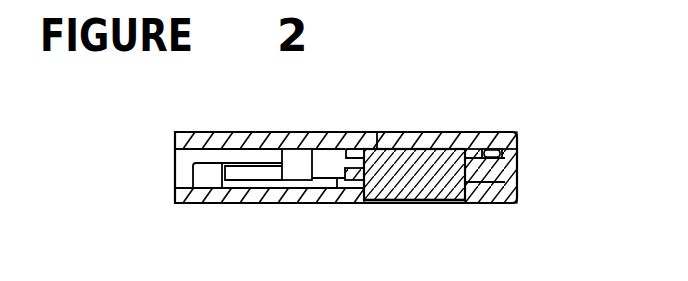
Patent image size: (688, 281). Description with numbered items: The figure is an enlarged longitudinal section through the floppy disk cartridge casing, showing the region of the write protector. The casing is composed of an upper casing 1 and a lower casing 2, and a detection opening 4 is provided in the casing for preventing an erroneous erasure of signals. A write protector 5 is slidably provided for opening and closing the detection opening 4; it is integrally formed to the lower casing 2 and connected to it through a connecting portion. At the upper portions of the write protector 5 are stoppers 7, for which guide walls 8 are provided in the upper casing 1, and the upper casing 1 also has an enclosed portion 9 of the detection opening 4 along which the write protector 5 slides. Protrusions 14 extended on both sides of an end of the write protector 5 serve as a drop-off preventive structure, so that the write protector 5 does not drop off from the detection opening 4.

The upper casing 1 is at (480, 131).
The lower casing 2 is at (508, 185).
The detection opening 4 is at (455, 204).
The write protector 5 is at (412, 203).
The stopper 7 is at (377, 131).
The guide wall 8 is at (338, 131).
The enclosed portion 9 is at (423, 131).
The protrusion 14 is at (338, 203).